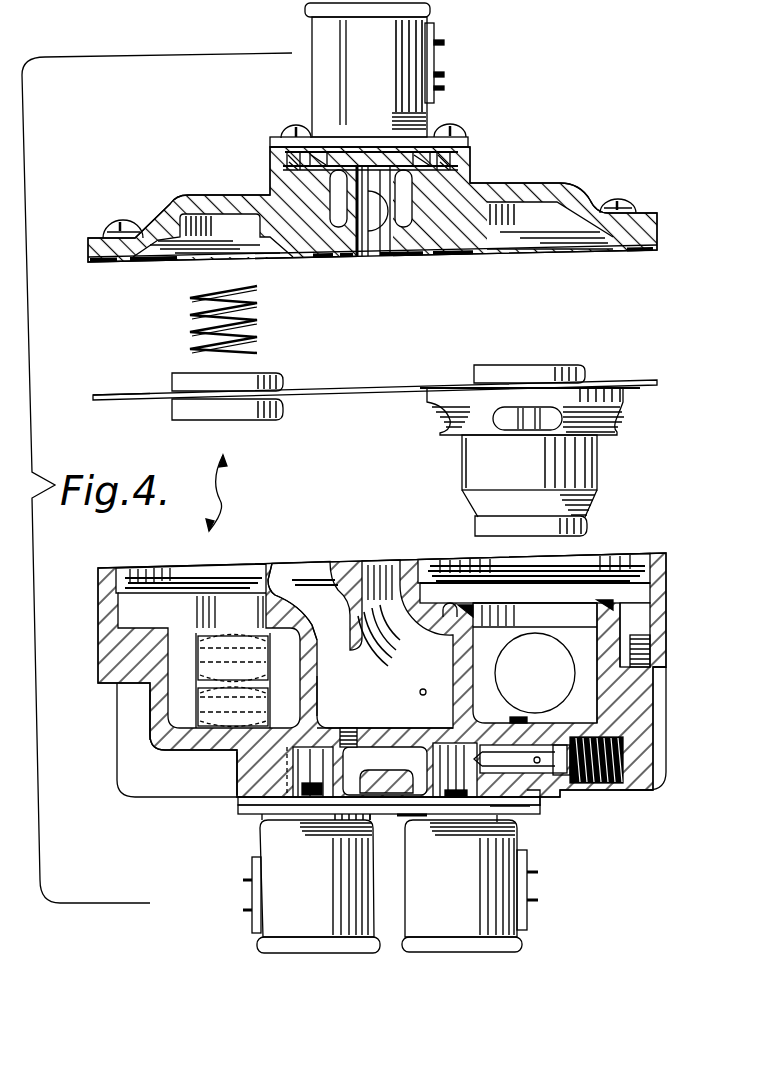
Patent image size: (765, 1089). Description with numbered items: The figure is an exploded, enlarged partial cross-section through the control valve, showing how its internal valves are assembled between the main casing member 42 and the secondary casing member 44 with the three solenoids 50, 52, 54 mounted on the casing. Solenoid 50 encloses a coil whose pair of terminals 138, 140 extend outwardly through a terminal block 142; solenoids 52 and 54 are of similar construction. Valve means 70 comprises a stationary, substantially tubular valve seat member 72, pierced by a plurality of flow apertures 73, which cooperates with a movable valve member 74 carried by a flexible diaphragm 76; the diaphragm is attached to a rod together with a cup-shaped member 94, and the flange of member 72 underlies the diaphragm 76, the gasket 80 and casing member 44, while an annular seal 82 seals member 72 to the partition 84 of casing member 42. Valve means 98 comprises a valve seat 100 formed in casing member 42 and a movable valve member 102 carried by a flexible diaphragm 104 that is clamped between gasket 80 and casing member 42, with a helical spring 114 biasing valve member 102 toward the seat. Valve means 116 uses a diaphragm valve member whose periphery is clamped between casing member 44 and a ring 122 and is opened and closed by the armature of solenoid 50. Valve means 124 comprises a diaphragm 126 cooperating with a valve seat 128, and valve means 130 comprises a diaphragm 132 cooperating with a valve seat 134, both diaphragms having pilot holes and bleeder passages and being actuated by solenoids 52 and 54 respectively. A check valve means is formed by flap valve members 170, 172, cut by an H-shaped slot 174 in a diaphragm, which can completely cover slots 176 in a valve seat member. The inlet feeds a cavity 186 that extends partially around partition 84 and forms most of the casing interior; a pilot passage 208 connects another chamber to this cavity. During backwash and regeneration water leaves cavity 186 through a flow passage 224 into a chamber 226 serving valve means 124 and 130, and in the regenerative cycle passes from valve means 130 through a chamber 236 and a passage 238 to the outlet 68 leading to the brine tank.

The main casing member 42 is at (667, 565).
The secondary casing member 44 is at (540, 184).
The solenoid 50 is at (360, 62).
The solenoid 52 is at (310, 920).
The solenoid 54 is at (468, 918).
The outlet 68 is at (625, 761).
The valve means 70 is at (535, 465).
The valve seat member 72 is at (470, 478).
The flow apertures 73 is at (512, 428).
The movable valve member 74 is at (477, 526).
The flexible diaphragm 76 is at (387, 389).
The gasket 80 is at (622, 253).
The annular seal 82 is at (604, 613).
The partition 84 is at (455, 612).
The cup-shaped member 94 is at (536, 364).
The valve means 98 is at (233, 493).
The valve seat 100 is at (272, 563).
The movable valve member 102 is at (181, 417).
The flexible diaphragm 104 is at (147, 389).
The helical spring 114 is at (258, 295).
The valve means 116 is at (405, 186).
The ring 122 is at (343, 163).
The valve means 124 is at (242, 799).
The diaphragm 126 is at (308, 778).
The valve seat 128 is at (265, 827).
The valve means 130 is at (498, 822).
The diaphragm 132 is at (494, 808).
The valve seat 134 is at (436, 800).
The terminal 138 is at (442, 33).
The terminal 140 is at (445, 67).
The terminal block 142 is at (446, 87).
The flap valve member 170 is at (197, 662).
The flap valve member 172 is at (183, 722).
The H-shaped slot 174 is at (238, 756).
The slots 176 is at (202, 668).
The cavity 186 is at (380, 697).
The pilot passage 208 is at (420, 693).
The flow passage 224 is at (397, 737).
The chamber 226 is at (400, 770).
The chamber 236 is at (522, 790).
The passage 238 is at (577, 783).